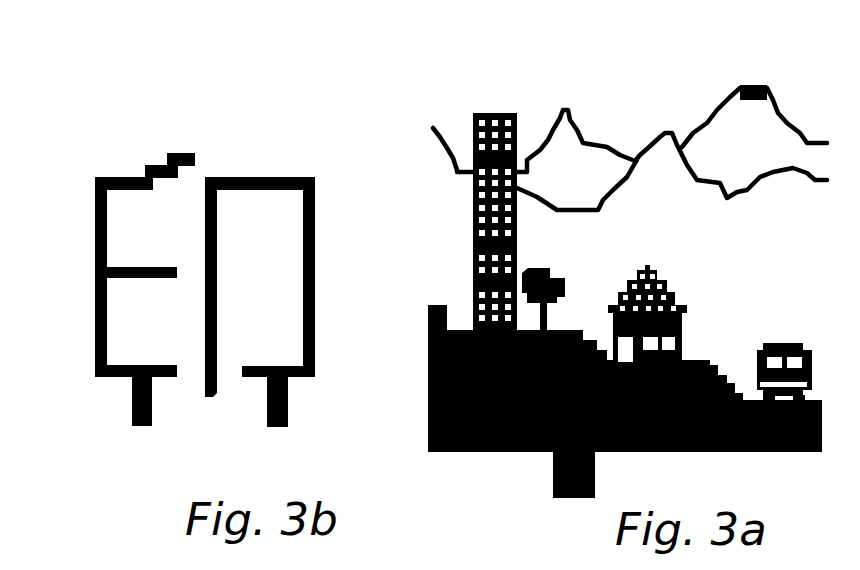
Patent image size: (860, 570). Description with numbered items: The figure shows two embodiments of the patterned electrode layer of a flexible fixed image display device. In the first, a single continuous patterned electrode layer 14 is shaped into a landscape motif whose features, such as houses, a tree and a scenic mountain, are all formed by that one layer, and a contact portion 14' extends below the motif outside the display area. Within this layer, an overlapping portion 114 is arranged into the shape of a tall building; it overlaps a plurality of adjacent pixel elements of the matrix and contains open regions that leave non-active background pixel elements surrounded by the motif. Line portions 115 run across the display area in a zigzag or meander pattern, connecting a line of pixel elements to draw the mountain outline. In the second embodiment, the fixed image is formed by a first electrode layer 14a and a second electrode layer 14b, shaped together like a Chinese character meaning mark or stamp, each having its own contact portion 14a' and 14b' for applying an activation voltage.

In FIG. 3A, the patterned electrode layer 14 is at (585, 334).
In FIG. 3A, the contact portion 14' is at (640, 475).
In FIG. 3B, the first electrode layer 14a is at (263, 247).
In FIG. 3B, the contact portion of first electrode layer 14a' is at (329, 414).
In FIG. 3B, the second electrode layer 14b is at (145, 265).
In FIG. 3B, the contact portion of second electrode layer 14b' is at (92, 410).
In FIG. 3A, the overlapping portion 114 is at (473, 160).
In FIG. 3A, the line portions 115 is at (593, 147).